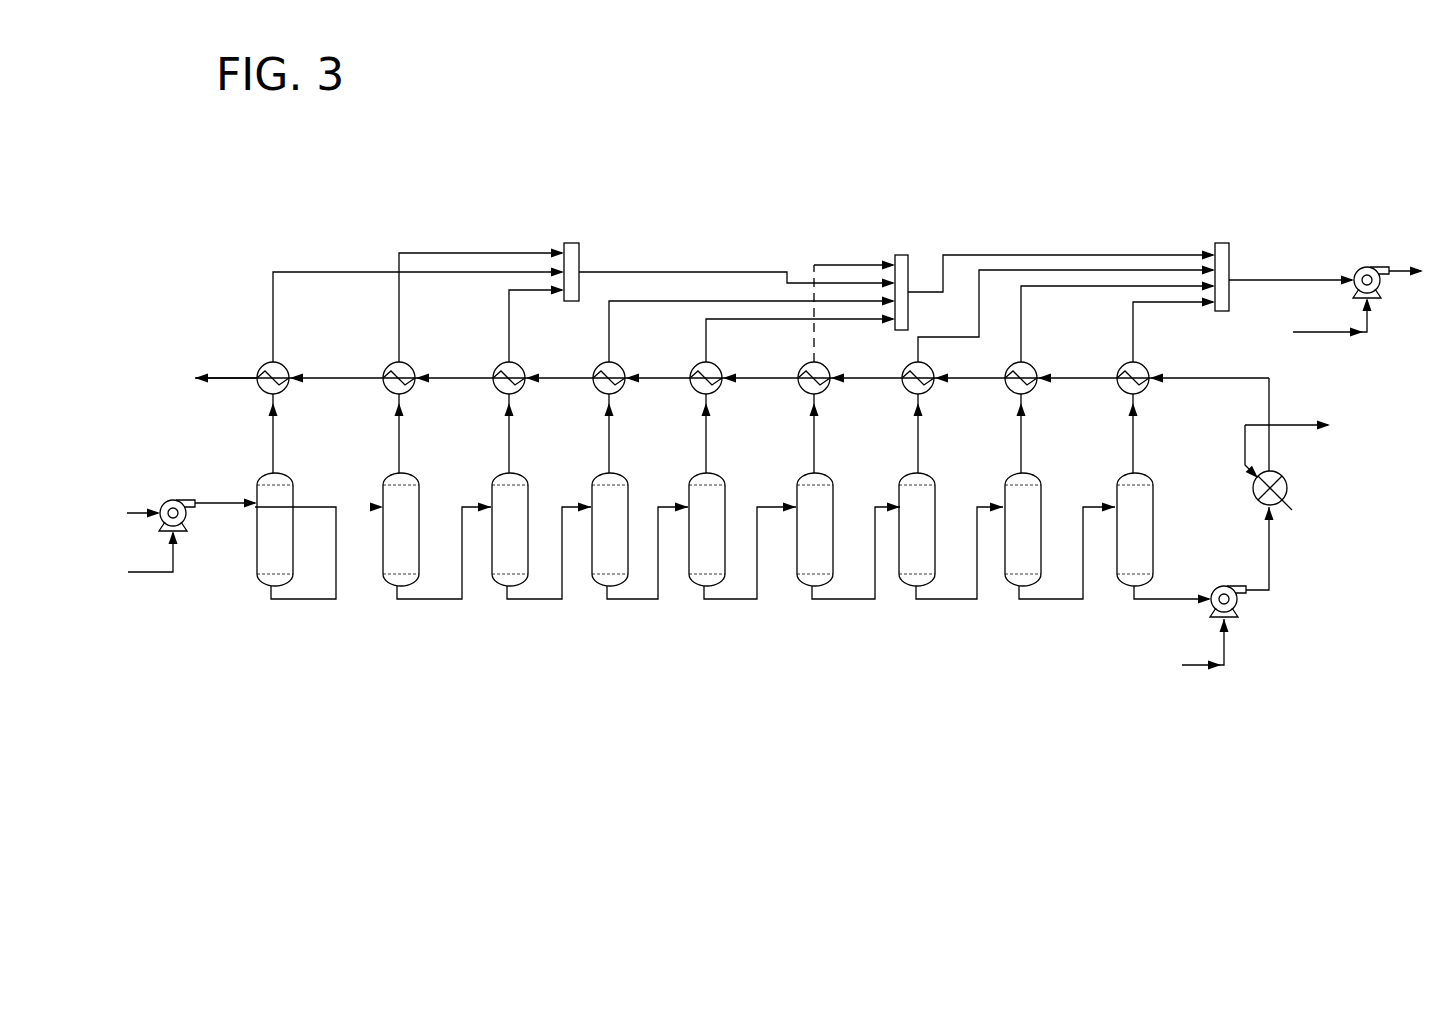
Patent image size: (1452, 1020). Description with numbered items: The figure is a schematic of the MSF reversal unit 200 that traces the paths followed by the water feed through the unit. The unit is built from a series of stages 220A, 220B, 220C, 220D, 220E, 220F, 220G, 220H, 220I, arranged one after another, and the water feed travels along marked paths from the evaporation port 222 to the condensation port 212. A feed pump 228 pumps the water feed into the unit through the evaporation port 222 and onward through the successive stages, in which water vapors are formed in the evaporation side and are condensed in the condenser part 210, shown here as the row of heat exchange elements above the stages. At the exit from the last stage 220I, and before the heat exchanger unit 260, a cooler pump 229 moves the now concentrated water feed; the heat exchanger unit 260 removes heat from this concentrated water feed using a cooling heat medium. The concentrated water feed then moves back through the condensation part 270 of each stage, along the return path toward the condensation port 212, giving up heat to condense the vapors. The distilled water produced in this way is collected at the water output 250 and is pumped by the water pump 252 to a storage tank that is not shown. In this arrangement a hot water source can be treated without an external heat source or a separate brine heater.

The MSF reversal unit 200 is at (787, 136).
The condenser part 210 is at (278, 362).
The condensation port 212 is at (241, 375).
The stage 220A is at (258, 567).
The stage 220B is at (387, 567).
The stage 220C is at (503, 560).
The stage 220D is at (606, 560).
The stage 220E is at (702, 560).
The stage 220F is at (815, 550).
The stage 220G is at (914, 555).
The stage 220H is at (1015, 558).
The stage 220I is at (1128, 565).
The evaporation port 222 is at (238, 503).
The feed pump 228 is at (175, 502).
The cooler pump 229 is at (271, 289).
The water output 250 is at (1297, 277).
The water pump 252 is at (1368, 268).
The heat exchanger unit 260 is at (1277, 503).
The condensation part 270 is at (618, 366).